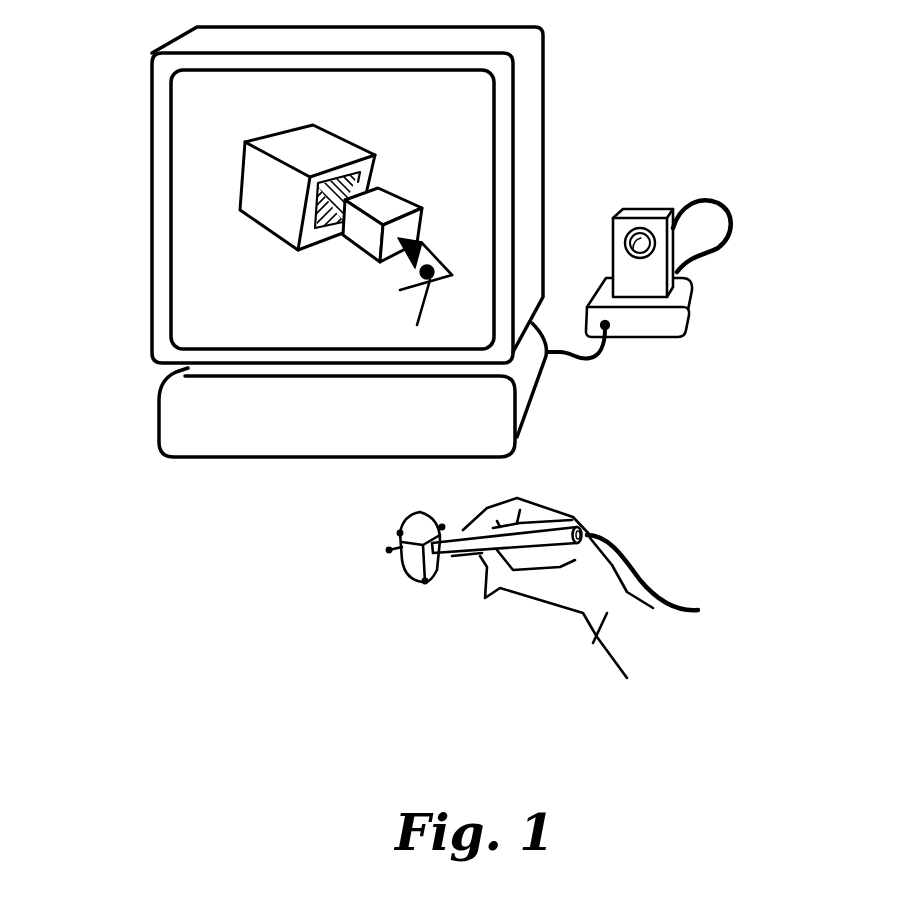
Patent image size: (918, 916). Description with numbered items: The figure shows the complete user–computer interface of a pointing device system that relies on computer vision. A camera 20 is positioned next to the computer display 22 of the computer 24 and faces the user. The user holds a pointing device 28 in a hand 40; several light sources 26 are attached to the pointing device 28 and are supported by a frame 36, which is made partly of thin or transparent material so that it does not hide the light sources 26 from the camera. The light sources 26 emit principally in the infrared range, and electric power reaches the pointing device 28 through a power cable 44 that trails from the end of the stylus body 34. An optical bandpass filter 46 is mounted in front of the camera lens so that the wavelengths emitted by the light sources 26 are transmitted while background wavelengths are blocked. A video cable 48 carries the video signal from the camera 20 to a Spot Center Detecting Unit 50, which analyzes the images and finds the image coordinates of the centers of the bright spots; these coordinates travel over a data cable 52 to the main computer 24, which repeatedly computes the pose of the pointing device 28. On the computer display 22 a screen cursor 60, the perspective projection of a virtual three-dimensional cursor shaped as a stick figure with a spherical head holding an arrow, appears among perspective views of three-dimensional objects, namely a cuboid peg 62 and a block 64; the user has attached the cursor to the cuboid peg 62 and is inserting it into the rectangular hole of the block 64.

The camera 20 is at (675, 293).
The computer display 22 is at (175, 98).
The computer 24 is at (180, 398).
The light sources 26 is at (397, 553).
The pointing device 28 is at (437, 568).
The stylus 34 is at (575, 514).
The frame 36 is at (407, 520).
The hand 40 is at (597, 638).
The power cable 44 is at (640, 577).
The optical bandpass filter 46 is at (630, 257).
The video cable 48 is at (733, 230).
The Spot Center Detecting Unit 50 is at (672, 333).
The data cable 52 is at (602, 343).
The screen cursor 60 is at (430, 288).
The cuboid peg 62 is at (387, 200).
The block 64 is at (268, 210).